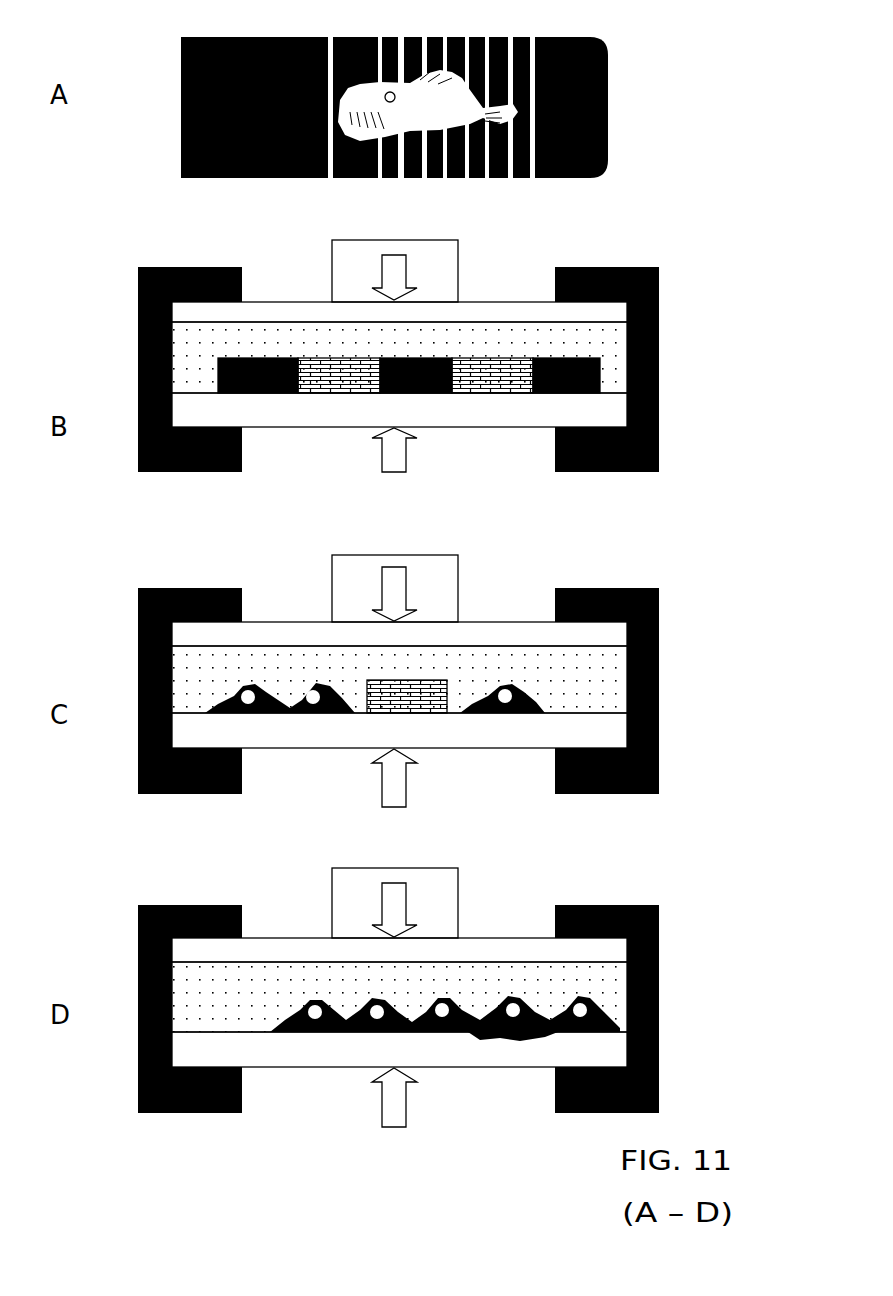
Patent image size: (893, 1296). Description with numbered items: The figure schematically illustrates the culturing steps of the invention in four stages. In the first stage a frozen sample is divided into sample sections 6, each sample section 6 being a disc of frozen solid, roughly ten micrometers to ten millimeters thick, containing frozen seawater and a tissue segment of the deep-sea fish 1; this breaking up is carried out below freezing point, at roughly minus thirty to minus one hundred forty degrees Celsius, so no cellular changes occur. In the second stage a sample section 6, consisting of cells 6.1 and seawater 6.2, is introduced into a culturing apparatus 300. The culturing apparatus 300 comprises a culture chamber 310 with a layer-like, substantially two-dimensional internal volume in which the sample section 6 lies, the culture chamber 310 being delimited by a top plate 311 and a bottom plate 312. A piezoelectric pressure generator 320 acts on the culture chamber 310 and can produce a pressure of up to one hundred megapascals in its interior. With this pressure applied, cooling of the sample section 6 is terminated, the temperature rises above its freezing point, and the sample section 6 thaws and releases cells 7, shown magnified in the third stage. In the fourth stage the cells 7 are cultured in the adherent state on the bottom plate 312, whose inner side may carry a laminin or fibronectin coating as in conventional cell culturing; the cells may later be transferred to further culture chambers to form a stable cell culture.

In FIG. 11A, the deep-sea fish 1 is at (410, 121).
In FIG. 11A, the sample section 6 is at (500, 38).
In FIG. 11B, the sample section 6 is at (477, 428).
In FIG. 11C, the sample section 6 is at (470, 740).
In FIG. 11B, the cells 6.1 is at (502, 380).
In FIG. 11B, the seawater 6.2 is at (293, 394).
In FIG. 11C, the cells 7 is at (308, 713).
In FIG. 11D, the cells 7 is at (445, 1018).
In FIG. 11B, the culturing apparatus 300 is at (750, 249).
In FIG. 11C, the culturing apparatus 300 is at (398, 687).
In FIG. 11D, the culturing apparatus 300 is at (398, 1005).
In FIG. 11B, the culture chamber 310 is at (488, 337).
In FIG. 11C, the culture chamber 310 is at (399, 679).
In FIG. 11D, the culture chamber 310 is at (399, 997).
In FIG. 11B, the top plate 311 is at (278, 304).
In FIG. 11C, the top plate 311 is at (399, 634).
In FIG. 11D, the top plate 311 is at (399, 950).
In FIG. 11B, the bottom plate 312 is at (278, 420).
In FIG. 11C, the bottom plate 312 is at (399, 730).
In FIG. 11D, the bottom plate 312 is at (305, 1053).
In FIG. 11B, the piezoelectric pressure generator 320 is at (342, 262).
In FIG. 11C, the piezoelectric pressure generator 320 is at (395, 588).
In FIG. 11D, the piezoelectric pressure generator 320 is at (395, 903).